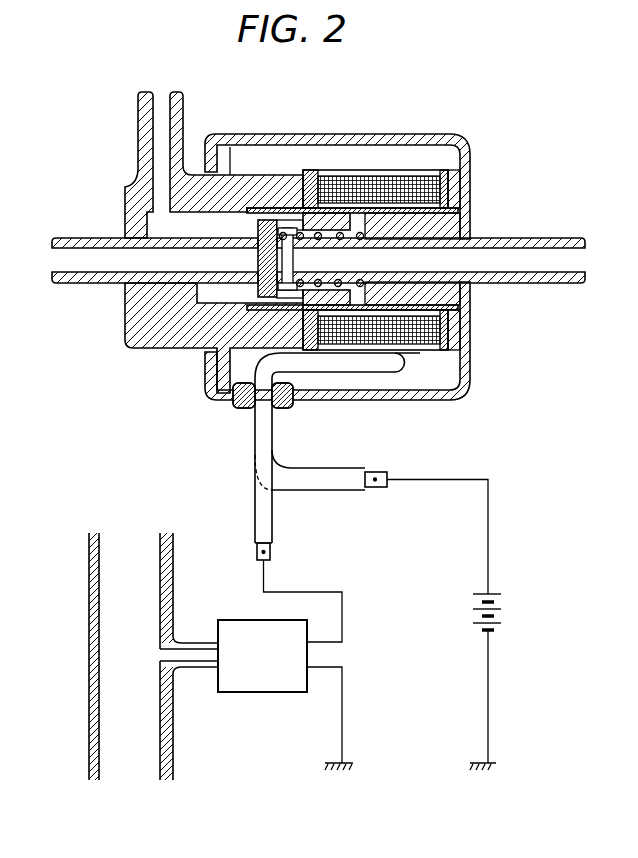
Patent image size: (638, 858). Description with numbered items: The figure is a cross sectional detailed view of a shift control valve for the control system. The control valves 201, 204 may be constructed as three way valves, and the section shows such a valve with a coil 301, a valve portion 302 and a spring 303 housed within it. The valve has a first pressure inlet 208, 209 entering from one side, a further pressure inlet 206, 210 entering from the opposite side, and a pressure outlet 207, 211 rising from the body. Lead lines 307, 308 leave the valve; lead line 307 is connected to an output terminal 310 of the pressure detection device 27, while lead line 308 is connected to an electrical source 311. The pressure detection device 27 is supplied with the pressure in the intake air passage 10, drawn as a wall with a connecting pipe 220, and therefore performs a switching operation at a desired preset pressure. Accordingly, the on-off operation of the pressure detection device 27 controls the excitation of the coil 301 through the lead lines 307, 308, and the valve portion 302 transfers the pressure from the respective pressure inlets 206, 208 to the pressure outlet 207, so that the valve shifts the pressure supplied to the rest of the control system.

The control valve 201 is at (368, 249).
The control valve 204 is at (462, 150).
The further pressure inlet 206 is at (151, 302).
The further pressure inlet 210 is at (82, 261).
The pressure outlet 207 is at (169, 156).
The pressure outlet 211 is at (155, 114).
The first pressure inlet 208 is at (431, 299).
The first pressure inlet 209 is at (522, 263).
The coil 301 is at (400, 170).
The valve portion 302 is at (265, 227).
The spring 303 is at (335, 217).
The lead line 307 is at (262, 508).
The lead line 308 is at (337, 480).
The output terminal 310 is at (340, 608).
The electrical source 311 is at (500, 620).
The intake air passage 10 is at (112, 566).
The pipe 220 is at (193, 657).
The pressure detection device 27 is at (267, 684).